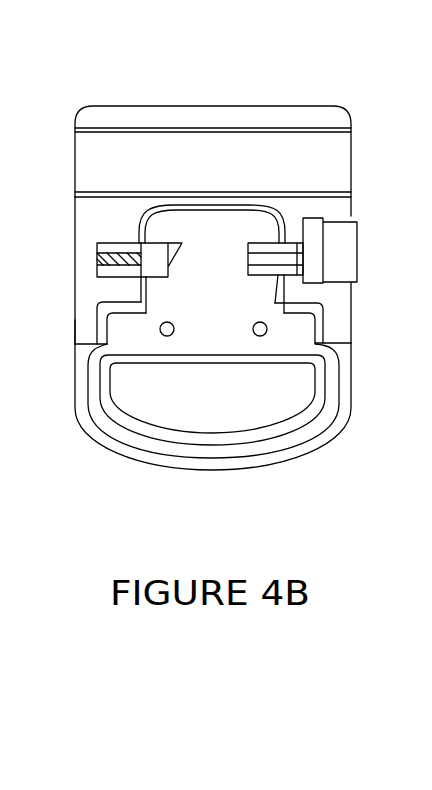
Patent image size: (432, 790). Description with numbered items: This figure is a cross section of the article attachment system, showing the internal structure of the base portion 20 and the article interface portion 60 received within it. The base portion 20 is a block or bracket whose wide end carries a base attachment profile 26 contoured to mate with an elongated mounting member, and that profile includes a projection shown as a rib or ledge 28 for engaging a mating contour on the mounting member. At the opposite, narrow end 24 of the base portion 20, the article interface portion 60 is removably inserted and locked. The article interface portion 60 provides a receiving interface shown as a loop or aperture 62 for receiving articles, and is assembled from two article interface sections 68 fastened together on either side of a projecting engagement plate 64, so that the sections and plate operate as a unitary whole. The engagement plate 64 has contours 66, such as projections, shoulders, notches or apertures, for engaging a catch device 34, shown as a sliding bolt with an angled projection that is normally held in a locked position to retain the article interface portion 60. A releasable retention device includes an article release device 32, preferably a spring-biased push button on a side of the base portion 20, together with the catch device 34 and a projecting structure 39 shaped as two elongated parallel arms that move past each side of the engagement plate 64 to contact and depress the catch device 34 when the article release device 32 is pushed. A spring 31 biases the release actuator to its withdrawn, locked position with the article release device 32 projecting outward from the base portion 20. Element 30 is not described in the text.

The base portion 20 is at (75, 223).
The narrow end 24 is at (37, 333).
The base attachment profile 26 is at (260, 133).
The rib or ledge 28 is at (140, 118).
The dividing wall 30 is at (152, 190).
The spring 31 is at (116, 253).
The article release device 32 is at (347, 237).
The catch device 34 is at (158, 256).
The projecting structure 39 is at (257, 277).
The article interface portion 60 is at (97, 427).
The loop or aperture 62 is at (168, 411).
The engagement plate 64 is at (123, 330).
The contours 66 is at (245, 254).
The article interface sections 68 is at (75, 406).